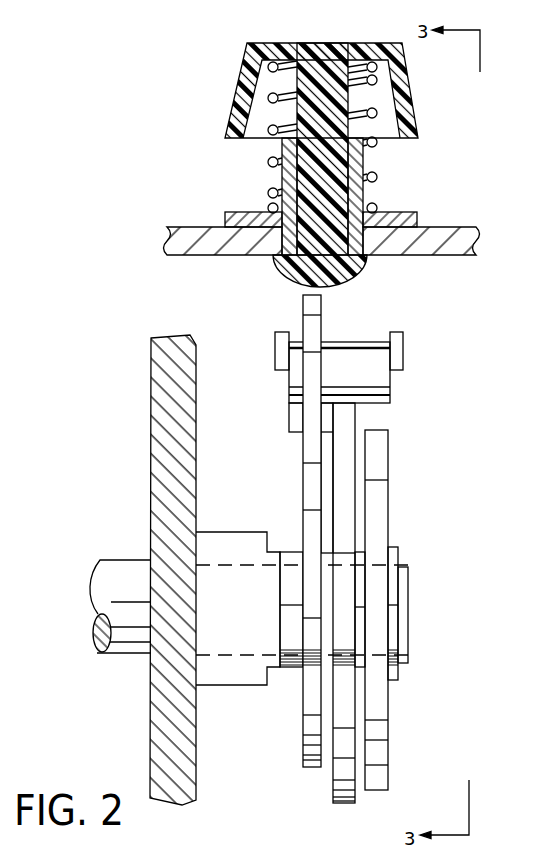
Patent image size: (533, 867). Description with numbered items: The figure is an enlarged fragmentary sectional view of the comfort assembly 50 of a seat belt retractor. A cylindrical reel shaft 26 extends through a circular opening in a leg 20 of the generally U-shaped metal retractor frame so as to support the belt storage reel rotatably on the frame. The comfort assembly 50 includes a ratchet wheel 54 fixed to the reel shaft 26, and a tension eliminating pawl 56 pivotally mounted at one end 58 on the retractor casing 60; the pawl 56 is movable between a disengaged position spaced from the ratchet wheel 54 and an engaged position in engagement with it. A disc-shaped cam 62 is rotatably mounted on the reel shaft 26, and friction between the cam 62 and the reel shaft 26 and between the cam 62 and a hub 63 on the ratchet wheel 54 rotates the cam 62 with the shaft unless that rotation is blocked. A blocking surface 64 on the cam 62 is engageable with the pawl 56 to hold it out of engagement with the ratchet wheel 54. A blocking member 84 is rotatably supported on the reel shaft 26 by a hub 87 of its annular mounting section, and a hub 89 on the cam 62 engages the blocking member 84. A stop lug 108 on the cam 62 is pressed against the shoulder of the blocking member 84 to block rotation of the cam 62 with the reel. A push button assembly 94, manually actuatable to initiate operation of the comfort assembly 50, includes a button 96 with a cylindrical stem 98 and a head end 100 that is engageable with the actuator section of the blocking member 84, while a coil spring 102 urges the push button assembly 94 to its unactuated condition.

The leg 20 is at (175, 736).
The reel shaft 26 is at (96, 631).
The comfort assembly 50 is at (456, 140).
The ratchet wheel 54 is at (381, 517).
The tension eliminating pawl 56 is at (368, 358).
The end of pawl 58 is at (401, 352).
The retractor casing 60 is at (464, 239).
The cam 62 is at (341, 808).
The hub 63 is at (361, 578).
The blocking surface 64 is at (346, 617).
The blocking member 84 is at (300, 511).
The hub 87 is at (297, 660).
The hub 89 is at (331, 658).
The push button assembly 94 is at (247, 41).
The button 96 is at (237, 101).
The stem 98 is at (317, 173).
The head end 100 is at (290, 262).
The coil spring 102 is at (366, 145).
The stop lug 108 is at (302, 413).